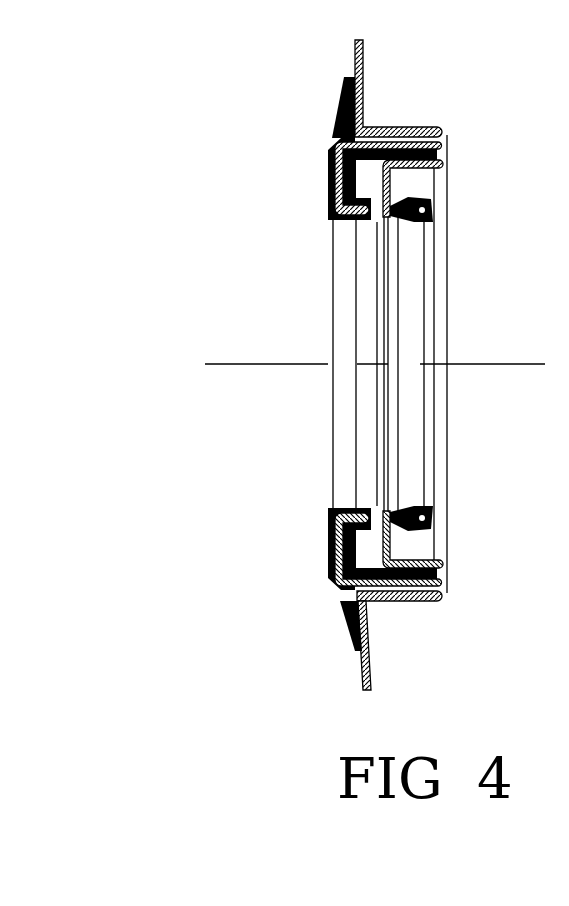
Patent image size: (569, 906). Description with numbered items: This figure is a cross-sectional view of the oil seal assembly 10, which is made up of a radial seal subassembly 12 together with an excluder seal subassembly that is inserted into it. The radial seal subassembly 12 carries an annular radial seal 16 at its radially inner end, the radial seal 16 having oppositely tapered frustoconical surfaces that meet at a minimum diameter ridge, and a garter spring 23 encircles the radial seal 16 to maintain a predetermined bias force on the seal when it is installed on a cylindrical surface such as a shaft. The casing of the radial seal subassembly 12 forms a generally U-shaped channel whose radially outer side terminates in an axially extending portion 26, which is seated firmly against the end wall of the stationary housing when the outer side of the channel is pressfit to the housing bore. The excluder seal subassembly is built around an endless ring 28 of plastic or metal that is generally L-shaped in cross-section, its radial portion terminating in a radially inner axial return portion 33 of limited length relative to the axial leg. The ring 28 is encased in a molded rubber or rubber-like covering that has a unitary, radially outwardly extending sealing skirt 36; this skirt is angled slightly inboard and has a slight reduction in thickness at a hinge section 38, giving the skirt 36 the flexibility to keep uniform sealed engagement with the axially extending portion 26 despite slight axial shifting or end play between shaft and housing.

The oil seal assembly 10 is at (320, 178).
The radial seal subassembly 12 is at (452, 566).
The radial seal 16 is at (420, 508).
The garter spring 23 is at (420, 205).
The axially extending portion 26 is at (362, 677).
The ring 28 is at (342, 548).
The radially inner axial return portion 33 is at (355, 223).
The sealing skirt 36 is at (355, 618).
The hinge section 38 is at (342, 592).